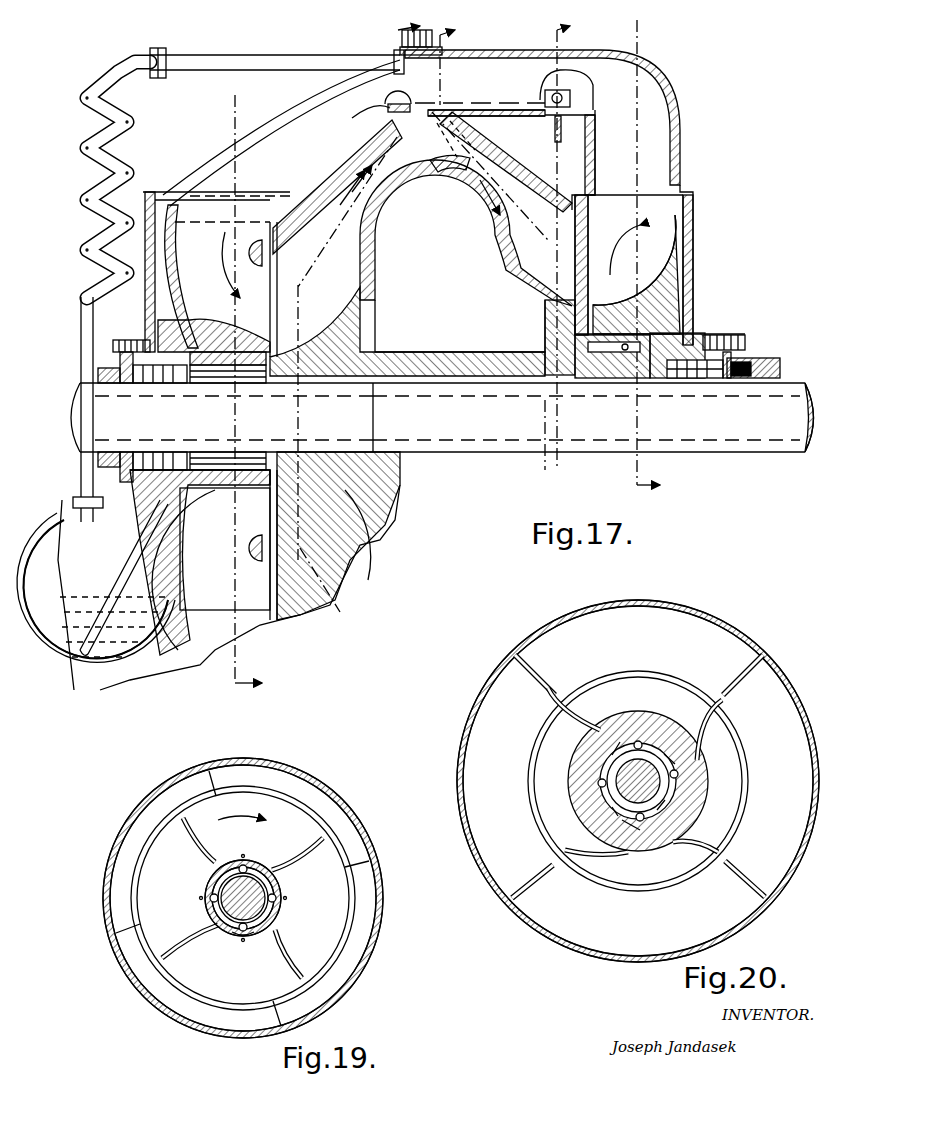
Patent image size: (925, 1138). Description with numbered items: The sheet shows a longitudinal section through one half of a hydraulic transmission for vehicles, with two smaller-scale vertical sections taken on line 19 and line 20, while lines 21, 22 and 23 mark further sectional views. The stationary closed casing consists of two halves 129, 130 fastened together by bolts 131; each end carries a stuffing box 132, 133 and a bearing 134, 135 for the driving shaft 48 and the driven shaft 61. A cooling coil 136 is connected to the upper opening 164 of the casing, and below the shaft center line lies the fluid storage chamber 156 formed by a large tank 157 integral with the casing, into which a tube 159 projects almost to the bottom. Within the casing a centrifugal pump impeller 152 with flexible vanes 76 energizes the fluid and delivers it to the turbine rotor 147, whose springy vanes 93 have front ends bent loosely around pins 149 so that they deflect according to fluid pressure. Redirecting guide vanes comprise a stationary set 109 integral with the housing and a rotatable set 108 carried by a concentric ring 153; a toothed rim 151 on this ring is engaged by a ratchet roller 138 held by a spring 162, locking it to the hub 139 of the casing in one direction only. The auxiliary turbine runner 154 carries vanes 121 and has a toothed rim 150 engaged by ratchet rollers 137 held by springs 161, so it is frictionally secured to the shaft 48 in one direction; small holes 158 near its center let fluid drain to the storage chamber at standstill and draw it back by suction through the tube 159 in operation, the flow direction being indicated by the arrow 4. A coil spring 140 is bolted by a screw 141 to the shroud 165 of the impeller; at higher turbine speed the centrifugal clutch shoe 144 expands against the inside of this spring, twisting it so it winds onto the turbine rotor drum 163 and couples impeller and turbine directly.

In FIG. 17, the flow arrow 4 is at (352, 187).
In FIG. 17, the section line 19— 19 is at (248, 386).
In FIG. 17, the section line 20— 20 is at (646, 252).
In FIG. 17, the section line 21— 21 is at (347, 321).
In FIG. 17, the section line 22— 22 is at (569, 259).
In FIG. 17, the section line 23— 23 is at (484, 261).
In FIG. 17, the driving shaft 48 is at (165, 424).
In FIG. 19, the driving shaft 48 is at (215, 910).
In FIG. 17, the driven shaft 61 is at (800, 382).
In FIG. 20, the driven shaft 61 is at (638, 781).
In FIG. 17, the vanes 76 is at (314, 248).
In FIG. 17, the flexible vanes 93 is at (520, 235).
In FIG. 17, the rotatable set 108 is at (660, 230).
In FIG. 20, the rotatable set 108 is at (705, 717).
In FIG. 17, the stationary set 109 is at (671, 125).
In FIG. 20, the stationary set 109 is at (736, 688).
In FIG. 17, the vanes 121 is at (178, 249).
In FIG. 19, the vanes 121 is at (204, 840).
In FIG. 17, the casing half 129 is at (232, 150).
In FIG. 19, the casing half 129 is at (340, 806).
In FIG. 17, the casing half 130 is at (670, 100).
In FIG. 20, the casing half 130 is at (752, 672).
In FIG. 17, the bolts 131 is at (434, 44).
In FIG. 17, the stuffing box 132 is at (110, 365).
In FIG. 17, the stuffing box 133 is at (748, 356).
In FIG. 17, the bearing 134 is at (170, 380).
In FIG. 17, the bearing 135 is at (703, 378).
In FIG. 17, the cooling coil 136 is at (122, 70).
In FIG. 17, the ratchet rollers 137 is at (260, 378).
In FIG. 19, the ratchet rollers 137 is at (280, 892).
In FIG. 17, the ratchet roller 138 is at (618, 367).
In FIG. 20, the ratchet roller 138 is at (676, 780).
In FIG. 17, the hub 139 is at (636, 378).
In FIG. 20, the hub 139 is at (638, 825).
In FIG. 17, the coil spring 140 is at (450, 108).
In FIG. 17, the screw 141 is at (396, 102).
In FIG. 17, the clutch shoe 144 is at (555, 120).
In FIG. 17, the turbine rotor 147 is at (552, 155).
In FIG. 17, the pins 149 is at (452, 165).
In FIG. 19, the toothed rim 150 is at (262, 870).
In FIG. 20, the toothed rim 151 is at (665, 808).
In FIG. 17, the pump impeller 152 is at (364, 342).
In FIG. 17, the concentric ring 153 is at (630, 320).
In FIG. 20, the concentric ring 153 is at (700, 770).
In FIG. 17, the auxiliary turbine runner 154 is at (200, 338).
In FIG. 17, the fluid storage chamber 156 is at (72, 575).
In FIG. 17, the tank 157 is at (92, 676).
In FIG. 17, the holes 158 is at (236, 358).
In FIG. 19, the holes 158 is at (246, 936).
In FIG. 17, the tube 159 is at (140, 560).
In FIG. 17, the springs 161 is at (228, 458).
In FIG. 19, the springs 161 is at (272, 906).
In FIG. 17, the spring 162 is at (625, 352).
In FIG. 20, the spring 162 is at (655, 815).
In FIG. 17, the turbine rotor drum 163 is at (515, 110).
In FIG. 17, the upper opening 164 is at (394, 67).
In FIG. 17, the shroud 165 is at (375, 98).